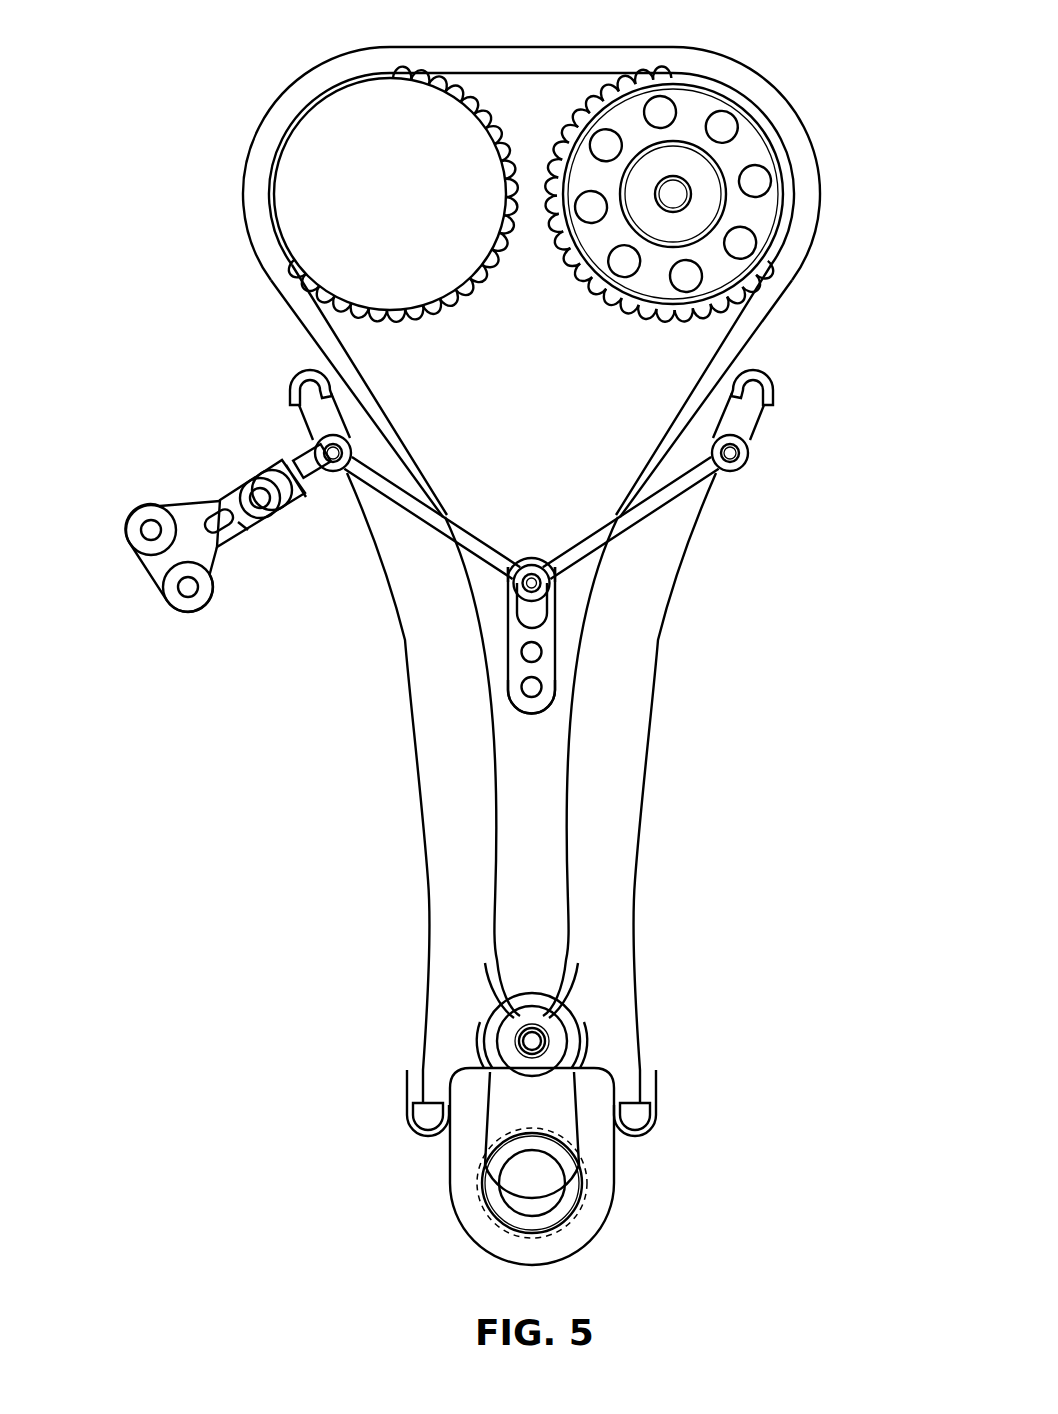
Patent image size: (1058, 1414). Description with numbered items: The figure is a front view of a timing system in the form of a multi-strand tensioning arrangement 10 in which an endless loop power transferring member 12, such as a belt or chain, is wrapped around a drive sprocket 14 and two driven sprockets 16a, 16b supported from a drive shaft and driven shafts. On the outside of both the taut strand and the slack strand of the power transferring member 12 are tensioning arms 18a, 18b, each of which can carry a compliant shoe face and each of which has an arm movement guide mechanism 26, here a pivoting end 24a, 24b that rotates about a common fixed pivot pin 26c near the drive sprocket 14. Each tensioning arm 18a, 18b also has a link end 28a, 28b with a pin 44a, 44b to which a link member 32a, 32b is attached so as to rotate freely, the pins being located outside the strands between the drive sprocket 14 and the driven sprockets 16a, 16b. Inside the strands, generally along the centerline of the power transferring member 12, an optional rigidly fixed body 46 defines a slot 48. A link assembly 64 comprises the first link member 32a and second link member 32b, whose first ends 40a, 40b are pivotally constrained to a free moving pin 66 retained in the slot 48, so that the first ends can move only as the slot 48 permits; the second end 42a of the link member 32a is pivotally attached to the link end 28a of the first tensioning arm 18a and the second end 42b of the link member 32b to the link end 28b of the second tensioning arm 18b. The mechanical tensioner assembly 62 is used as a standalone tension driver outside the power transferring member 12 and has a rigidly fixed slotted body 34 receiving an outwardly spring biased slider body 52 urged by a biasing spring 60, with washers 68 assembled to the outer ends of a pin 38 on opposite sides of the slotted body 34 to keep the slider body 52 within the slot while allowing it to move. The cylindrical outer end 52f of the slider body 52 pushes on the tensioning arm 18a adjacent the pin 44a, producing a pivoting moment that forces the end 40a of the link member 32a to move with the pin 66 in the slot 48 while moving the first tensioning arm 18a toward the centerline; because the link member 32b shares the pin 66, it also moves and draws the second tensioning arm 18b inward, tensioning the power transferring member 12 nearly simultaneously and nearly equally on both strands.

The multi-strand tensioning arrangement 10 is at (162, 78).
The endless loop power transferring member 12 is at (263, 118).
The drive sprocket 14 is at (540, 1183).
The driven sprocket 16a is at (310, 194).
The driven sprocket 16b is at (750, 148).
The first tensioning arm 18a is at (331, 734).
The second tensioning arm 18b is at (716, 753).
The pivoting end 24a is at (487, 970).
The pivoting end 24b is at (576, 970).
The arm movement guide mechanism 26 is at (597, 993).
The common fixed pivot pin 26c is at (536, 1040).
The link end 28a is at (305, 422).
The link end 28b is at (757, 422).
The first link member 32a is at (463, 528).
The second link member 32b is at (660, 514).
The slotted body 34 is at (140, 534).
The pin 38 is at (270, 508).
The first end of link member 40a is at (508, 583).
The first end of link member 40b is at (556, 583).
The second end of link member 42a is at (256, 472).
The second end of link member 42b is at (801, 466).
The pin 44a is at (336, 470).
The pin 44b is at (752, 460).
The fixed body 46 is at (532, 712).
The slot 48 is at (540, 689).
The slider body 52 is at (272, 548).
The cylindrical portion 52f is at (300, 468).
The biasing spring 60 is at (218, 550).
The mechanical tensioner assembly 62 is at (195, 562).
The link assembly 64 is at (546, 611).
The free moving pin 66 is at (536, 566).
The washers 68 is at (220, 501).